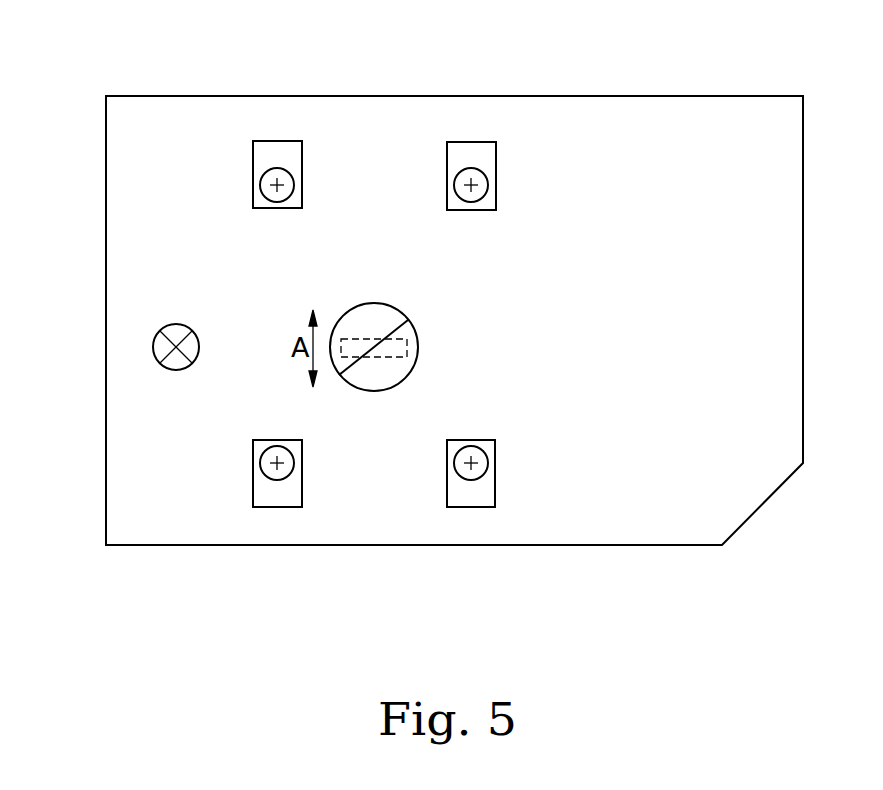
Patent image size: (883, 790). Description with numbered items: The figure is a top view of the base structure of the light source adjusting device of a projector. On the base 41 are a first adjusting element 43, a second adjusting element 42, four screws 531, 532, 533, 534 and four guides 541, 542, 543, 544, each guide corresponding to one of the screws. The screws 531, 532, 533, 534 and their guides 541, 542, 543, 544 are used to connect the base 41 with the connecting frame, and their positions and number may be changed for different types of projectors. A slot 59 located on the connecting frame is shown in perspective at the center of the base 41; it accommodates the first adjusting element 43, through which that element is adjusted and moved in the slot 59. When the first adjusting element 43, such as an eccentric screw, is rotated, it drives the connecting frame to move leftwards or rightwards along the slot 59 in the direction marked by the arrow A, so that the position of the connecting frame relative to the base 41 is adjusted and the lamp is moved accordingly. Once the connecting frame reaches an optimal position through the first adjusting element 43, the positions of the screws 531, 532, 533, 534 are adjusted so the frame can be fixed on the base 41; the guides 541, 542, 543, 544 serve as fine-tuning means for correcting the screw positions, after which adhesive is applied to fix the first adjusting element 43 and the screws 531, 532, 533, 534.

The base 41 is at (758, 310).
The second adjusting element 42 is at (165, 349).
The first adjusting element 43 is at (380, 365).
The slot 59 is at (364, 337).
The screw 531 is at (272, 176).
The screw 532 is at (462, 175).
The screw 533 is at (463, 470).
The screw 534 is at (270, 470).
The guide 541 is at (284, 141).
The guide 542 is at (483, 142).
The guide 543 is at (480, 492).
The guide 544 is at (288, 493).